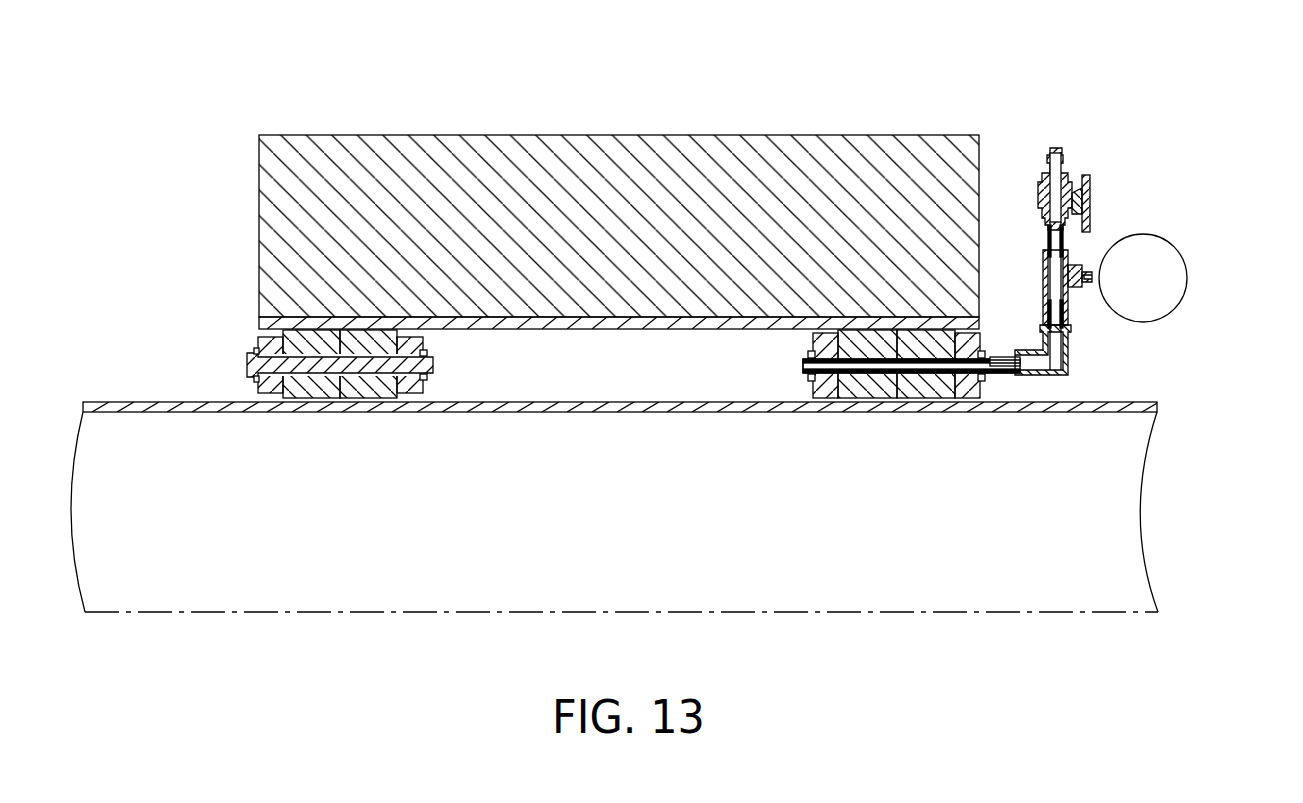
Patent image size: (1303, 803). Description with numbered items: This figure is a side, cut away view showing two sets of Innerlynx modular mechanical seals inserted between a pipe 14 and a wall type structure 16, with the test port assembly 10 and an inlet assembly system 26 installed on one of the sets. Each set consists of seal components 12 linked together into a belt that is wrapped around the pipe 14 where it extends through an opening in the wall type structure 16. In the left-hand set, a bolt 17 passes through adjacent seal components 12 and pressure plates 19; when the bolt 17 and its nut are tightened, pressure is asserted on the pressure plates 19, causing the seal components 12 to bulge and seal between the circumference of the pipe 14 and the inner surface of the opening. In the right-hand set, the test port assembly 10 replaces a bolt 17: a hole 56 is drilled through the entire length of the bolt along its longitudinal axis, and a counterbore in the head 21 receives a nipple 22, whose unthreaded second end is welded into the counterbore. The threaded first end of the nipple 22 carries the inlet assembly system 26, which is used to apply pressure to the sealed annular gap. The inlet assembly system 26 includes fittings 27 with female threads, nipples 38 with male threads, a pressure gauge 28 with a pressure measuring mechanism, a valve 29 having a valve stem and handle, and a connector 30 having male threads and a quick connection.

The test port assembly 10 is at (936, 398).
The seal components 12 is at (303, 400).
The pipe 14 is at (103, 402).
The wall type structure 16 is at (600, 135).
The bolt 17 is at (440, 365).
The pressure plates 19 is at (268, 392).
The head 21 is at (250, 362).
The nipple 22 is at (1000, 372).
The inlet assembly system 26 is at (1140, 188).
The fittings 27 is at (1046, 265).
The pressure gauge 28 is at (1187, 276).
The valve 29 is at (1090, 178).
The connector 30 is at (1048, 163).
The nipples 38 is at (1043, 315).
The hole 56 is at (803, 364).